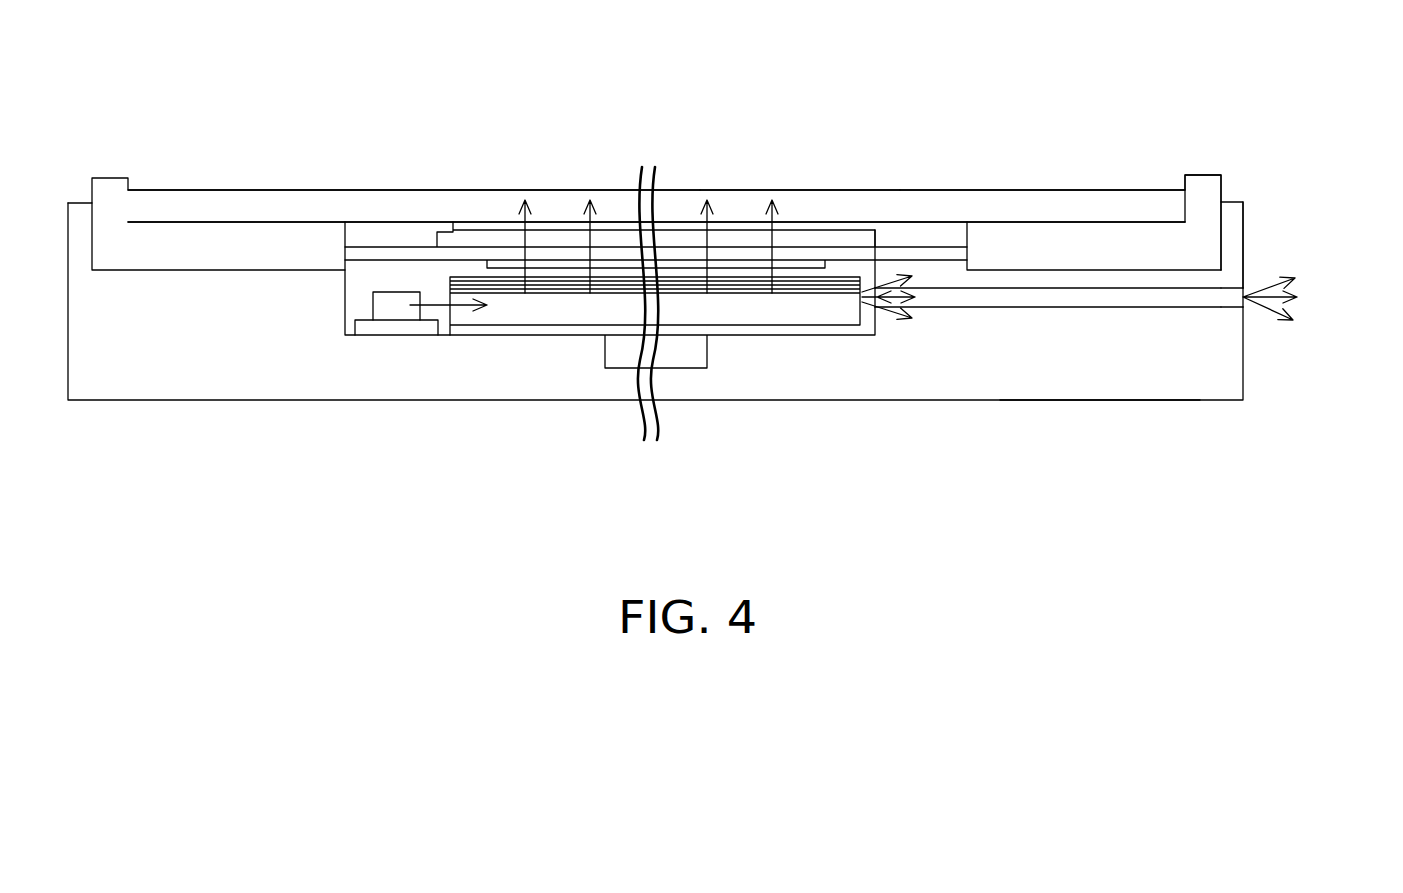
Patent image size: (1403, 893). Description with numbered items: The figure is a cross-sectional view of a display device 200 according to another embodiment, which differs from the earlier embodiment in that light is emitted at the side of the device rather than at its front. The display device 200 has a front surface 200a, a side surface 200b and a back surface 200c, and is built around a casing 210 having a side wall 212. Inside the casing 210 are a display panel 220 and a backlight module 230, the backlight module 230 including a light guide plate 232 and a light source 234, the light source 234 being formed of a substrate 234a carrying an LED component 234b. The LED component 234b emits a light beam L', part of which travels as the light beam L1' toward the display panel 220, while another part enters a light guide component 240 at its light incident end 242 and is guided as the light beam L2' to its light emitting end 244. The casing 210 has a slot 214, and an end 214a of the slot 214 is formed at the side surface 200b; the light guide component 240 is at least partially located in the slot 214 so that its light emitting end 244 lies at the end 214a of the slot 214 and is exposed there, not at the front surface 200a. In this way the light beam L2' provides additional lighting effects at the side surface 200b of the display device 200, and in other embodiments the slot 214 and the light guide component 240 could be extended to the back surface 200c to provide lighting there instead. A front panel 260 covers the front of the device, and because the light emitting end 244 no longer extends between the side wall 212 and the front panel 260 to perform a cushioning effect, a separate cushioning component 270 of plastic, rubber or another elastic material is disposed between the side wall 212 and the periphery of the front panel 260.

The display device 200 is at (1323, 497).
The front surface 200a is at (808, 142).
The side surface 200b is at (1281, 264).
The back surface 200c is at (1096, 444).
The casing 210 is at (1227, 370).
The side wall 212 is at (1235, 217).
The slot 214 is at (1149, 292).
The end of the slot 214a is at (1244, 274).
The display panel 220 is at (490, 257).
The backlight module 230 is at (534, 385).
The light guide plate 232 is at (530, 315).
The light source 234 is at (315, 397).
The substrate 234a is at (370, 327).
The LED component 234b is at (395, 308).
The light guide component 240 is at (1013, 298).
The light incident end 242 is at (888, 310).
The light emitting end 244 is at (1228, 282).
The front panel 260 is at (1018, 203).
The cushioning component 270 is at (1200, 198).
The light beam L' is at (426, 217).
The light beam L1' is at (648, 208).
The light beam L2' is at (1097, 367).